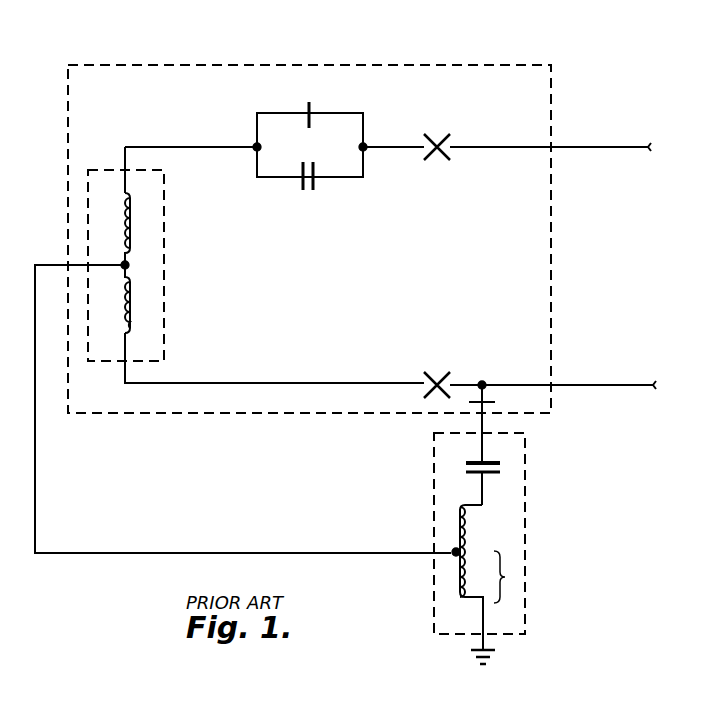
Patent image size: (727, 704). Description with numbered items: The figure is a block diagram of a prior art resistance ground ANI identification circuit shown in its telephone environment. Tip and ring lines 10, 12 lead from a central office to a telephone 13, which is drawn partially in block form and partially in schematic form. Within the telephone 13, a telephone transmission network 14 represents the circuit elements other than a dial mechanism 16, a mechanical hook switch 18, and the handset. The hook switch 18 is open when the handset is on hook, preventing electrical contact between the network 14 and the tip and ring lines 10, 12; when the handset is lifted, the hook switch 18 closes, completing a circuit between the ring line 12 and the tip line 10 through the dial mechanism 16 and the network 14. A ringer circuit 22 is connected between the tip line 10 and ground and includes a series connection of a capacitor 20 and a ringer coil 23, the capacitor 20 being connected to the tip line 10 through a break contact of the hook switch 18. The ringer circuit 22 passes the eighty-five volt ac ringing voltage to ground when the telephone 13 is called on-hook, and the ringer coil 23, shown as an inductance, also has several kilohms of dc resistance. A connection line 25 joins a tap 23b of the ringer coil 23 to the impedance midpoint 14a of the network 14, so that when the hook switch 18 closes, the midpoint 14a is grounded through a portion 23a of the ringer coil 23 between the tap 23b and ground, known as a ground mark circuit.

The tip line 10 is at (620, 386).
The ring line 12 is at (572, 147).
The telephone 13 is at (440, 63).
The telephone transmission network 14 is at (165, 233).
The impedance midpoint 14a is at (129, 265).
The dial mechanism 16 is at (250, 123).
The mechanical hook switch 18 is at (437, 157).
The capacitor 20 is at (478, 459).
The ringer circuit 22 is at (527, 483).
The ringer coil 23 is at (470, 535).
The portion of ringer coil 23a is at (517, 578).
The tap 23b is at (453, 551).
The connection line 25 is at (104, 553).